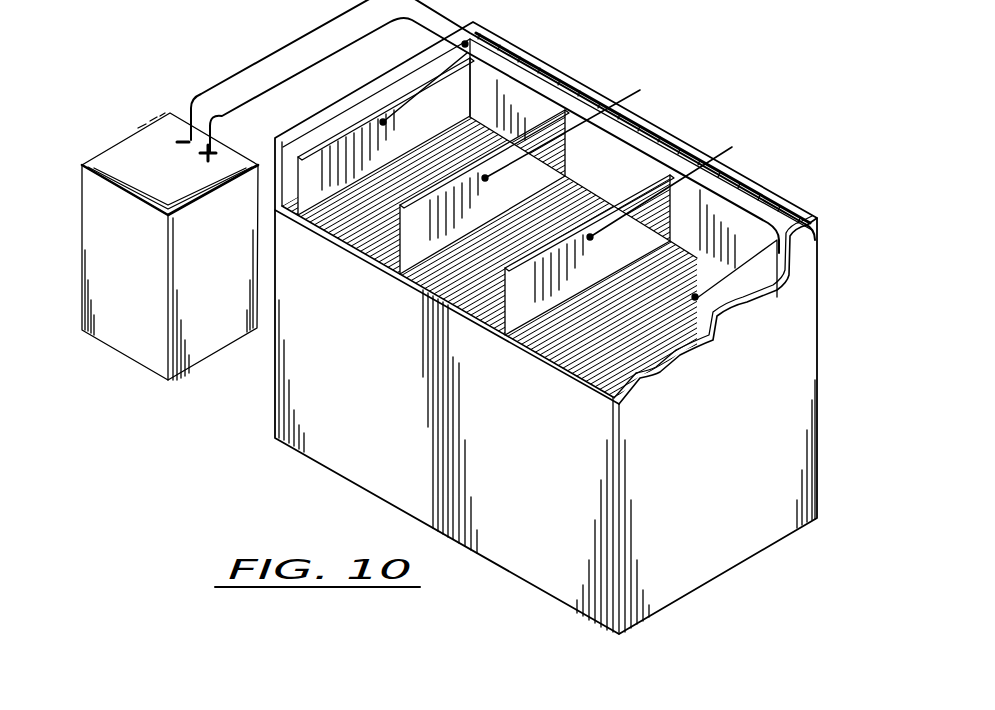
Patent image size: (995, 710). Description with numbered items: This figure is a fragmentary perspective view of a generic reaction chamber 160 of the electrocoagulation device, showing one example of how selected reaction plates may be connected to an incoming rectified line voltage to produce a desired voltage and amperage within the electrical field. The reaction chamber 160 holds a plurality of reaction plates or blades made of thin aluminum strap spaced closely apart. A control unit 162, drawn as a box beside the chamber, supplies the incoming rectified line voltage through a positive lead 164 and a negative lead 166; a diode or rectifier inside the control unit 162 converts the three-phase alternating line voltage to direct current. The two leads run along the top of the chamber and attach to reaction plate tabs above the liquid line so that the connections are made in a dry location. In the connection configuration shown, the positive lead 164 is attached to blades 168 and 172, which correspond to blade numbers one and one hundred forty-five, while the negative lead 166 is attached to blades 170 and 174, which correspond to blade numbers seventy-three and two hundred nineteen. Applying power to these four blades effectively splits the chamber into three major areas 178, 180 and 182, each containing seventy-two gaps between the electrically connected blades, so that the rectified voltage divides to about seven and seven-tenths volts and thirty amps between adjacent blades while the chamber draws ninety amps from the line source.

The reaction chamber 160 is at (258, 436).
The control unit 162 is at (118, 318).
The positive lead 164 is at (268, 92).
The negative lead 166 is at (227, 85).
The blade 168 is at (372, 135).
The blade 170 is at (547, 173).
The blade 172 is at (645, 228).
The blade 174 is at (782, 250).
The major area 178 is at (378, 227).
The major area 180 is at (462, 275).
The major area 182 is at (580, 330).